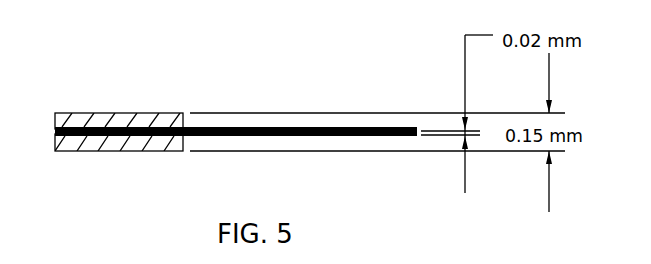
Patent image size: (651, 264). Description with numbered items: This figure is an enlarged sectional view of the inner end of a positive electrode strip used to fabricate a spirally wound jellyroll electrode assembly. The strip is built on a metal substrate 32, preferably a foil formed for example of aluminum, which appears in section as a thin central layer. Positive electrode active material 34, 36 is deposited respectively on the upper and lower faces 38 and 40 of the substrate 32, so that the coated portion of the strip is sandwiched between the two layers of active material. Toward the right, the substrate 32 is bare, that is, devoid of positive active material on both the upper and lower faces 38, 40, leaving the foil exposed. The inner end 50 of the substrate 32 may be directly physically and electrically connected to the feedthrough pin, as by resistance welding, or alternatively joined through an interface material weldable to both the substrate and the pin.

The metal substrate 32 is at (385, 128).
The positive electrode active material 34 is at (80, 113).
The positive electrode active material 36 is at (102, 151).
The upper face 38 is at (265, 127).
The lower face 40 is at (257, 137).
The inner end 50 is at (208, 63).